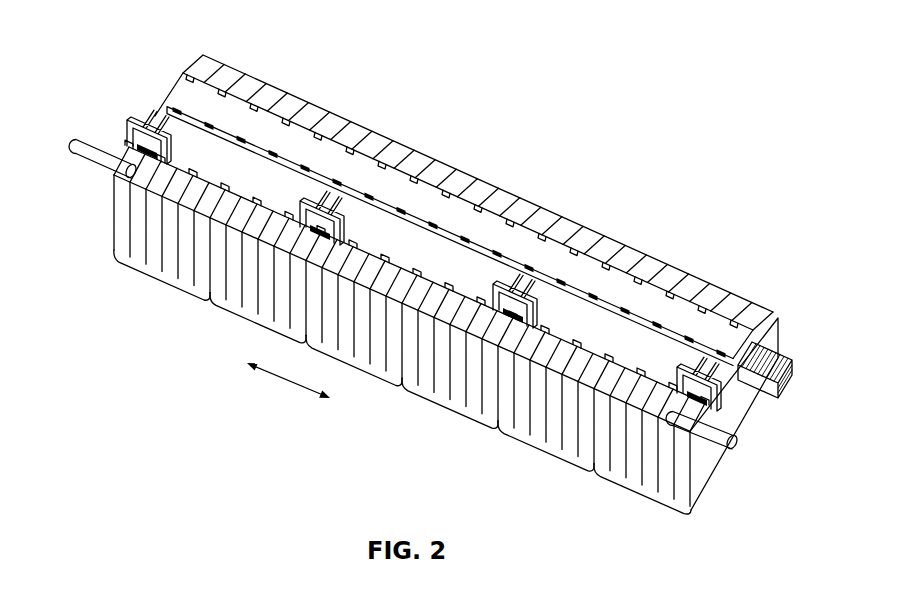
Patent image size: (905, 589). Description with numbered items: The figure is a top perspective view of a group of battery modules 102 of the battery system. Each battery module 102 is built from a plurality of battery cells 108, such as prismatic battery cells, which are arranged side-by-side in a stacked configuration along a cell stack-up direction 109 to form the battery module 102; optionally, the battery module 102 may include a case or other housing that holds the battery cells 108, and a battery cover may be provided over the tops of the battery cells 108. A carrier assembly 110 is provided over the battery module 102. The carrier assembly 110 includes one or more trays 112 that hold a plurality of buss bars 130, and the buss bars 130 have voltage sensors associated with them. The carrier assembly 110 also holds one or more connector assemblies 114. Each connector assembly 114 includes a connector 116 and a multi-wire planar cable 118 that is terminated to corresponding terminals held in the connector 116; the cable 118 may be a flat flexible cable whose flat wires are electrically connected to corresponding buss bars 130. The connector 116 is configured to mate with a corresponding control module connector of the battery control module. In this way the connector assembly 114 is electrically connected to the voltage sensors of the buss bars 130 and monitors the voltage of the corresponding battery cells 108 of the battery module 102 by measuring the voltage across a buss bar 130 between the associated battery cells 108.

The battery module 102 is at (200, 298).
The battery cell 108 is at (513, 207).
The cell stack-up direction 109 is at (286, 382).
The carrier assembly 110 is at (301, 146).
The tray 112 is at (731, 338).
The connector assembly 114 is at (810, 361).
The connector 116 is at (789, 363).
The multi-wire planar cable 118 is at (741, 383).
The buss bar 130 is at (495, 328).